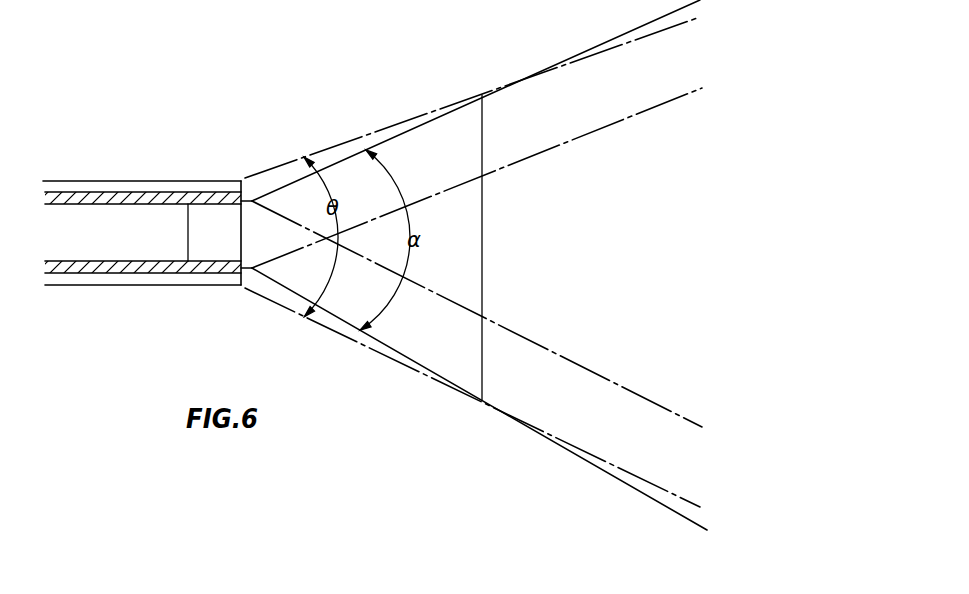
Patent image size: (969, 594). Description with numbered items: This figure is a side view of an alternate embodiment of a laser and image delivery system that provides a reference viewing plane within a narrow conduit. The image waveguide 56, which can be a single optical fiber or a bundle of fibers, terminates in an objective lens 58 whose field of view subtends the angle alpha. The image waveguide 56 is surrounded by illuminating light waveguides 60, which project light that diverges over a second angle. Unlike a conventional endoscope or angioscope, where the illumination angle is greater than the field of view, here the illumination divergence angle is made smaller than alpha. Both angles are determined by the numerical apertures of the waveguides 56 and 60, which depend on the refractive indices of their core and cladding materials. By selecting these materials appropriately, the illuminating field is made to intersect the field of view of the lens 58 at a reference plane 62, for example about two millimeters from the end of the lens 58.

The image waveguide 56 is at (97, 223).
The objective lens 58 is at (208, 225).
The illuminating light waveguides 60 is at (160, 181).
The reference plane 62 is at (484, 268).